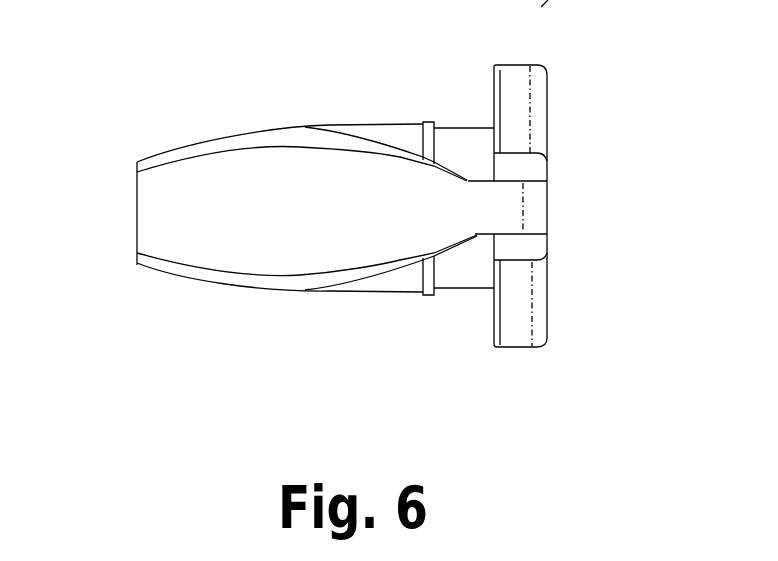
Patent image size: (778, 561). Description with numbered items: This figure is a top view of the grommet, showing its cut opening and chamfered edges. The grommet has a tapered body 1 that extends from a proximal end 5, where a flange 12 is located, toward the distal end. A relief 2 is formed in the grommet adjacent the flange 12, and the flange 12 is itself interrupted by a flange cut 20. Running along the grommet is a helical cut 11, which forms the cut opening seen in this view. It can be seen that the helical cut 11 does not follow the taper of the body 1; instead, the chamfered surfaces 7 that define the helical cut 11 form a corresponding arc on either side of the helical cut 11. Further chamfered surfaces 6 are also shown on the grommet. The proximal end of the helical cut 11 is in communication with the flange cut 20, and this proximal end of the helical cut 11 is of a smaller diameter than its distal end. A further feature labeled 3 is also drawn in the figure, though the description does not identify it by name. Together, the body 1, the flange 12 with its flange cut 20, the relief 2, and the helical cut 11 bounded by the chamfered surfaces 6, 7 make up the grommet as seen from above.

The body 1 is at (358, 281).
The relief 2 is at (466, 128).
The head 3 is at (495, 327).
The proximal end 5 is at (427, 295).
The chamfered surfaces 6 is at (518, 167).
The chamfered surfaces 7 is at (228, 282).
The helical cut 11 is at (203, 225).
The flange 12 is at (520, 93).
The flange cut 20 is at (530, 205).